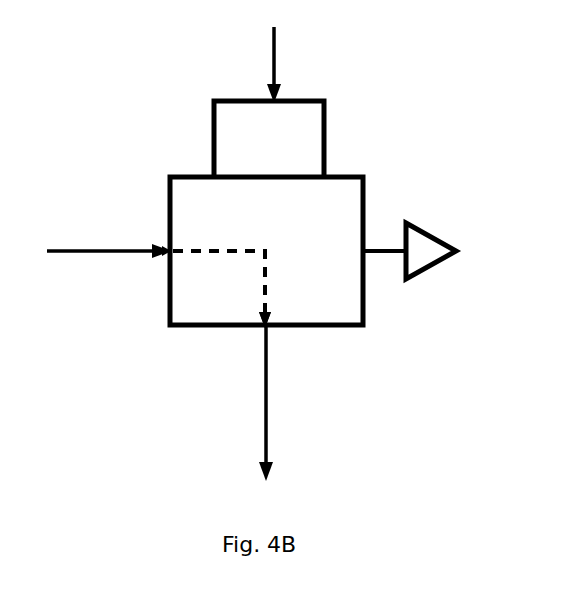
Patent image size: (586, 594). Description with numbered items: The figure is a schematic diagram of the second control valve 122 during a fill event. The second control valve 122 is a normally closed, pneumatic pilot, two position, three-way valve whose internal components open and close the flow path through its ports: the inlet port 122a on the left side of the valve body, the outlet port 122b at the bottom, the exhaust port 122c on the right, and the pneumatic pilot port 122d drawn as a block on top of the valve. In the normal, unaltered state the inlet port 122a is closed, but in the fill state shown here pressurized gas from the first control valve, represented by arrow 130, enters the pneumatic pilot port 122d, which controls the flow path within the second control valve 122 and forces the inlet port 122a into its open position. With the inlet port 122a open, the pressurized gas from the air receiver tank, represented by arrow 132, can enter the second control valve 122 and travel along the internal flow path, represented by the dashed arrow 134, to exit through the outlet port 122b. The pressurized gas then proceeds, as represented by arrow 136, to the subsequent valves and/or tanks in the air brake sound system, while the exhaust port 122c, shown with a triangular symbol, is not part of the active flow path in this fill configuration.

The second control valve 122 is at (355, 173).
The inlet port 122a is at (166, 247).
The outlet port 122b is at (270, 332).
The exhaust port 122c is at (406, 225).
The pneumatic pilot port 122d is at (269, 139).
The arrow 130 is at (276, 53).
The arrow 132 is at (63, 253).
The arrow 134 is at (260, 293).
The arrow 136 is at (267, 453).